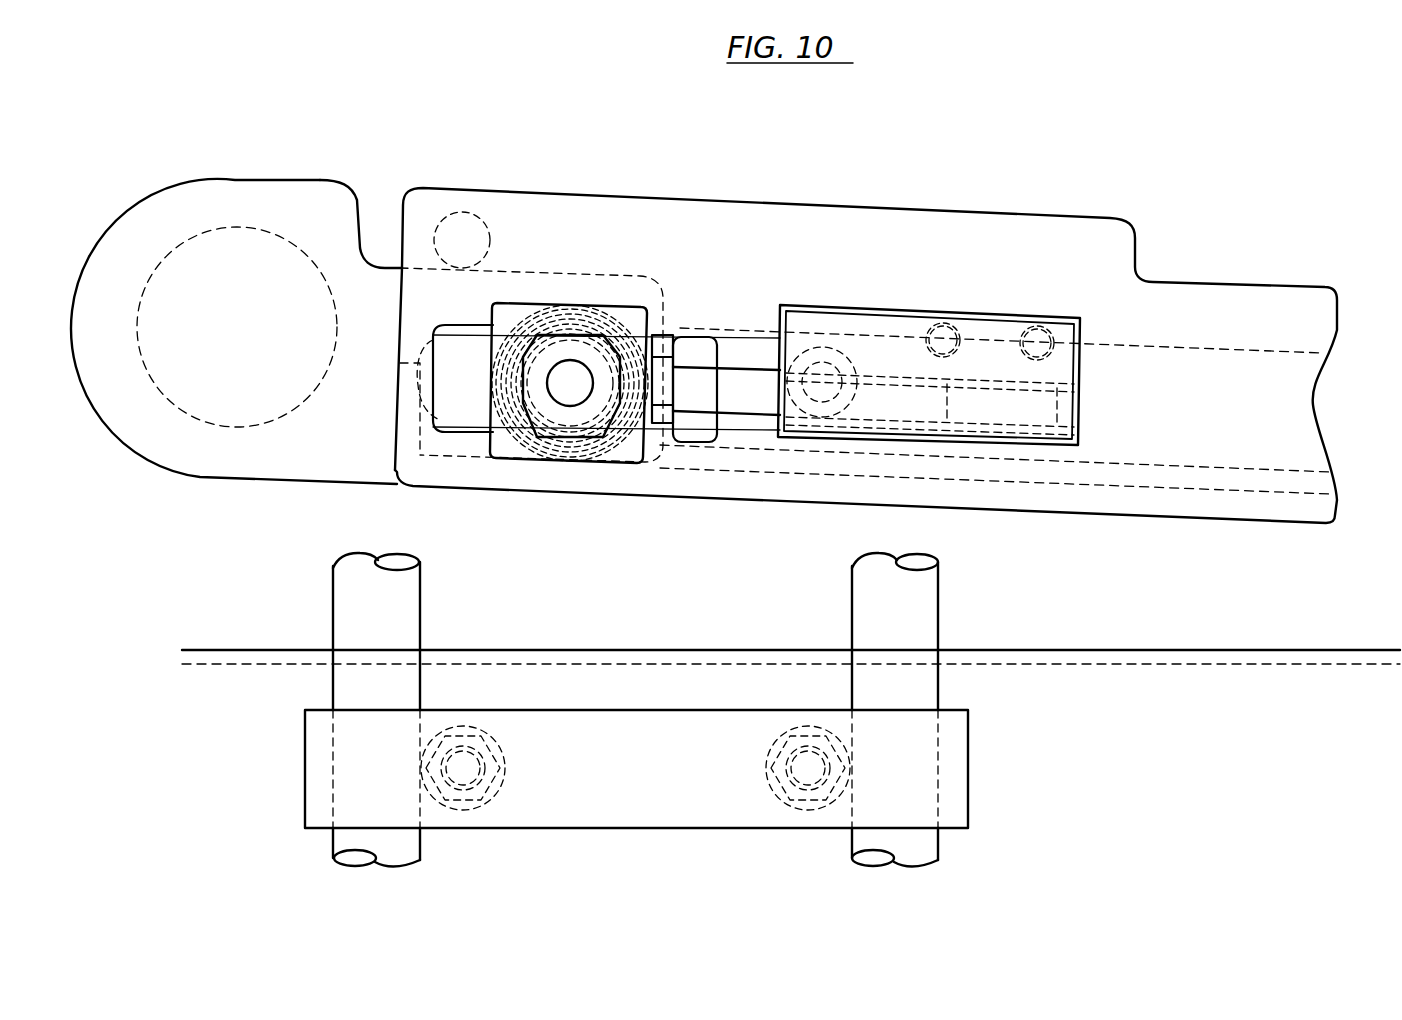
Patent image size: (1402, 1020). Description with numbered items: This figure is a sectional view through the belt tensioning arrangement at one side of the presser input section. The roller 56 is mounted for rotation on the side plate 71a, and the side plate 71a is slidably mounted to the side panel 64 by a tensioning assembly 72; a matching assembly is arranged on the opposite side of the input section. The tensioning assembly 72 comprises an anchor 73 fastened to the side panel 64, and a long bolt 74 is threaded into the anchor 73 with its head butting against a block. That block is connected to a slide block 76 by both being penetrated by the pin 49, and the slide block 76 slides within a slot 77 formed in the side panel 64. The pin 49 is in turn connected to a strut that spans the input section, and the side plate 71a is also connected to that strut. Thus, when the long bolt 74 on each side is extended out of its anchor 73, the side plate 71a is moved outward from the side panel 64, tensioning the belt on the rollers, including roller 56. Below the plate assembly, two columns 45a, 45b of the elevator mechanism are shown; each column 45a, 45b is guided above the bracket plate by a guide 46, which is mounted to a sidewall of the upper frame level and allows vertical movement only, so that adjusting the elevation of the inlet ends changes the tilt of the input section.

The side plate 71a is at (142, 210).
The roller 56 is at (190, 420).
The side panel 64 is at (1033, 213).
The slide block 76 is at (645, 460).
The slot 77 is at (467, 415).
The long bolt 74 is at (746, 366).
The tensioning assembly 72 is at (708, 300).
The pin 49 is at (565, 360).
The anchor 73 is at (1067, 317).
The column 45a is at (422, 620).
The column 45b is at (940, 620).
The guide 46 is at (970, 773).